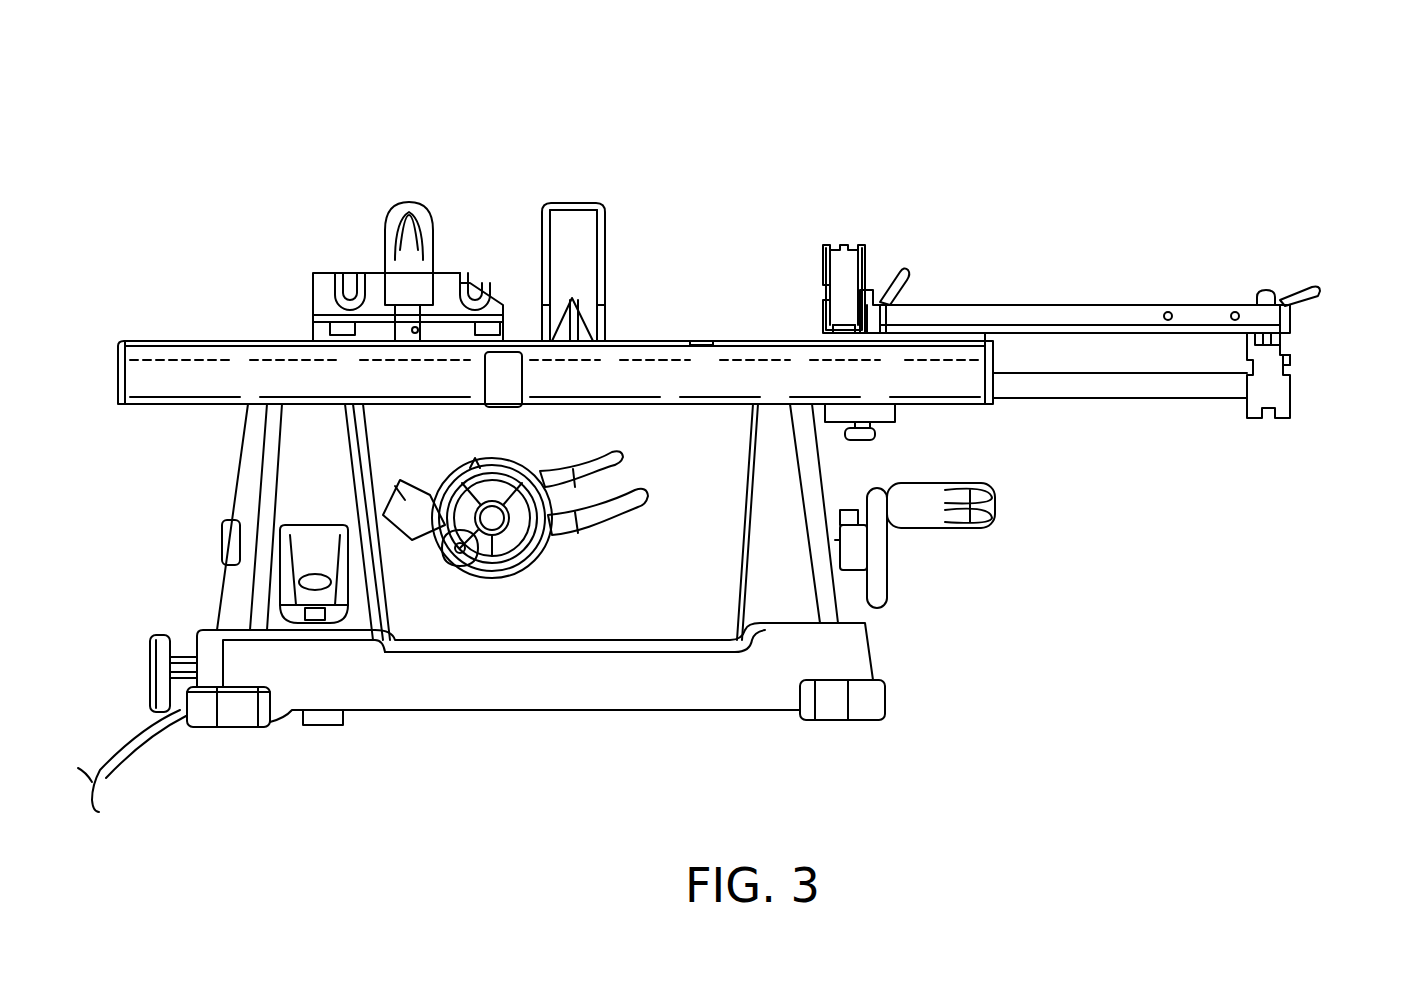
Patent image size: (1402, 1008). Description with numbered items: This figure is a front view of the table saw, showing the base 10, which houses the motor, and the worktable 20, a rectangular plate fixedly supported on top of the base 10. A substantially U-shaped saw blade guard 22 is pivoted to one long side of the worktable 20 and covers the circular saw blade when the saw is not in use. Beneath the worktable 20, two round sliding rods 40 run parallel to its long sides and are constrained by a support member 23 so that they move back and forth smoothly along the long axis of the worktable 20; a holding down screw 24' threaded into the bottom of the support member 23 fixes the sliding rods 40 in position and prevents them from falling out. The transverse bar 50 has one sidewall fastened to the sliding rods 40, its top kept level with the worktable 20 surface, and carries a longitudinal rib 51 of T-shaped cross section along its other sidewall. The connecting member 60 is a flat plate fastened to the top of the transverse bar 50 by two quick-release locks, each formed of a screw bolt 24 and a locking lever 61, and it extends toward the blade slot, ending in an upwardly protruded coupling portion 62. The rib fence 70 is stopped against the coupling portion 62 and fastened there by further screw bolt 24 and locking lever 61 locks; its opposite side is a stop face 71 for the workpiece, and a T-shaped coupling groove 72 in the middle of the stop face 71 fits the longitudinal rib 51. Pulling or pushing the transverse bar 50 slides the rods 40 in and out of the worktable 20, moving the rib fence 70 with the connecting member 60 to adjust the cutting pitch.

The base 10 is at (660, 685).
The worktable 20 is at (156, 332).
The U-shaped saw blade guard 22 is at (540, 225).
The support member 23 is at (900, 413).
The screw bolt 24 is at (1260, 261).
The holding down screw 24' is at (952, 459).
The sliding rods 40 is at (1147, 390).
The transverse bar 50 is at (1268, 434).
The longitudinal rib 51 is at (1293, 365).
The connecting member 60 is at (1110, 312).
The locking lever 61 is at (876, 300).
The coupling portion 62 is at (880, 300).
The rib fence 70 is at (843, 228).
The stop face 71 is at (822, 250).
The coupling groove 72 is at (823, 305).